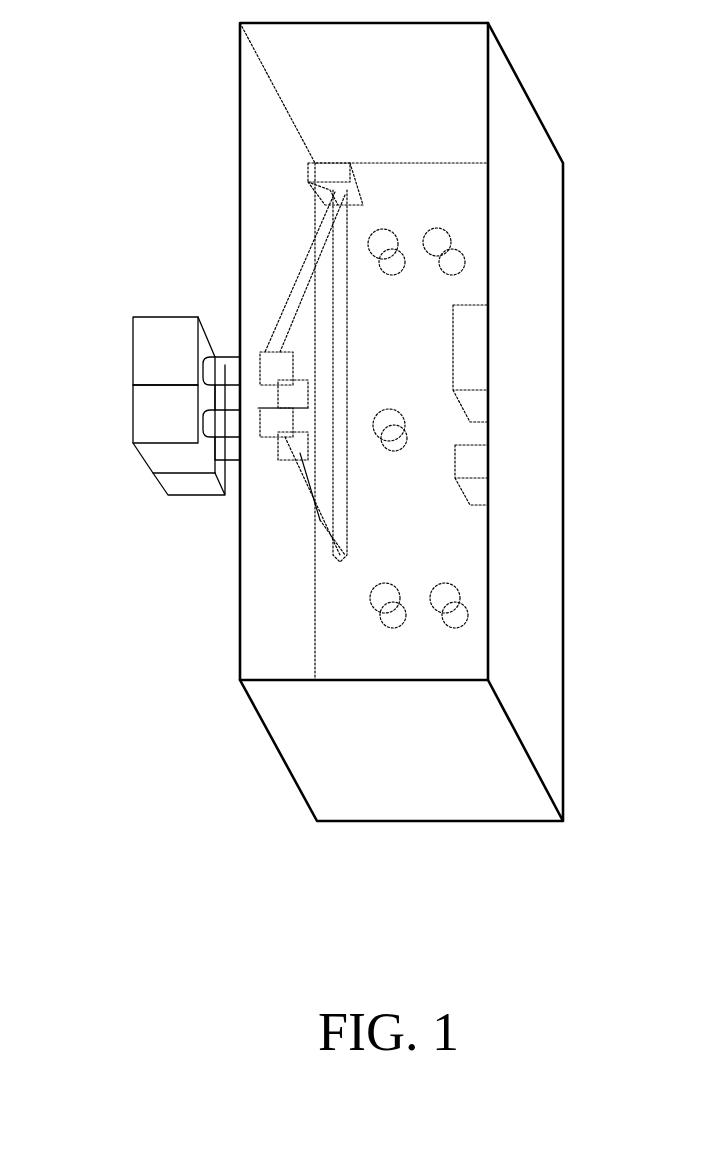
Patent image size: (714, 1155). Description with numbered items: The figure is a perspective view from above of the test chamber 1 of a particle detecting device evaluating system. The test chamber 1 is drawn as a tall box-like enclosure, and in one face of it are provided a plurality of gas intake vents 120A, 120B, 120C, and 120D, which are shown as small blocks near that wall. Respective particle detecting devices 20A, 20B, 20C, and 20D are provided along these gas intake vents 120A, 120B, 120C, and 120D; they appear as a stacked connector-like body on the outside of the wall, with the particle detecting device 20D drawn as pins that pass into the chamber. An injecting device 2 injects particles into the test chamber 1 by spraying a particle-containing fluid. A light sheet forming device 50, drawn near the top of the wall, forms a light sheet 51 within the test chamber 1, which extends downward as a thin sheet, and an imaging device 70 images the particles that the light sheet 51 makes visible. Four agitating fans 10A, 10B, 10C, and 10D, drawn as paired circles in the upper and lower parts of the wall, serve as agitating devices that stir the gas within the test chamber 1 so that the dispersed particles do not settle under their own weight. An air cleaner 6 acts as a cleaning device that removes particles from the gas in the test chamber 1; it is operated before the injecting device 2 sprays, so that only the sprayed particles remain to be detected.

The test chamber 1 is at (530, 140).
The injecting device 2 is at (393, 425).
The air cleaner 6 is at (477, 350).
The imaging device 70 is at (477, 467).
The light sheet forming device 50 is at (335, 173).
The light sheet 51 is at (333, 510).
The agitating fan 10A is at (387, 618).
The agitating fan 10B is at (450, 618).
The agitating fan 10C is at (383, 232).
The agitating fan 10D is at (455, 228).
The particle detecting device 20A is at (143, 462).
The particle detecting device 20B is at (168, 490).
The particle detecting device 20C is at (143, 350).
The particle detecting device 20D is at (218, 353).
The gas intake vent 120A is at (285, 447).
The gas intake vent 120B is at (317, 522).
The gas intake vent 120C is at (297, 348).
The gas intake vent 120D is at (312, 393).